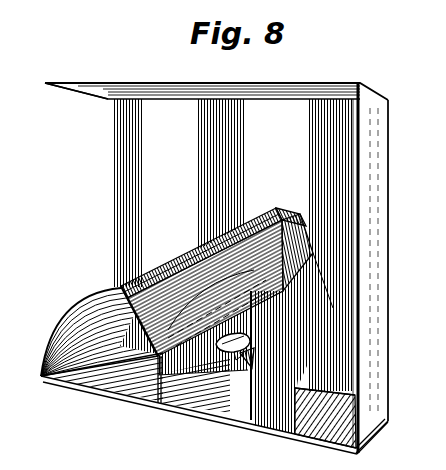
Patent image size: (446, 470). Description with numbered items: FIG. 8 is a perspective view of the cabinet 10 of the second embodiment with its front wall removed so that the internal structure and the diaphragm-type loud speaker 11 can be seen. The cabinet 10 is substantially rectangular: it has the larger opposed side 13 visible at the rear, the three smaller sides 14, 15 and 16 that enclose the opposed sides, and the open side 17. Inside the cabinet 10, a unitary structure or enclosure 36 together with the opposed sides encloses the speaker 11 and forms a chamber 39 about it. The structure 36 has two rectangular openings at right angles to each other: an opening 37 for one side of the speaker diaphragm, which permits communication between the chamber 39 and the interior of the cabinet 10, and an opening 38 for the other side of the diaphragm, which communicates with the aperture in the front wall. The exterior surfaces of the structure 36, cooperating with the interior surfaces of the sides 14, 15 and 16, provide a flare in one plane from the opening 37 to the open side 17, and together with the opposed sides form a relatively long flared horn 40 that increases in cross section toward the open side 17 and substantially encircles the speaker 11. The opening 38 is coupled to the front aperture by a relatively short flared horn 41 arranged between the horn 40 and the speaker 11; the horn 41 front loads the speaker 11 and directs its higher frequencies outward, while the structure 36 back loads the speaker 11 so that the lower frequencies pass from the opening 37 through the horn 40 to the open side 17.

The cabinet 10 is at (381, 187).
The loud speaker 11 is at (217, 393).
The opposed side 13 is at (320, 102).
The smaller side 14 is at (127, 84).
The smaller side 15 is at (378, 312).
The smaller side 16 is at (115, 372).
The open side 17 is at (89, 190).
The unitary structure 36 is at (266, 203).
The opening 37 is at (298, 388).
The opening 38 is at (185, 388).
The chamber 39 is at (247, 398).
The flared horn 40 is at (190, 145).
The flared horn 41 is at (178, 250).